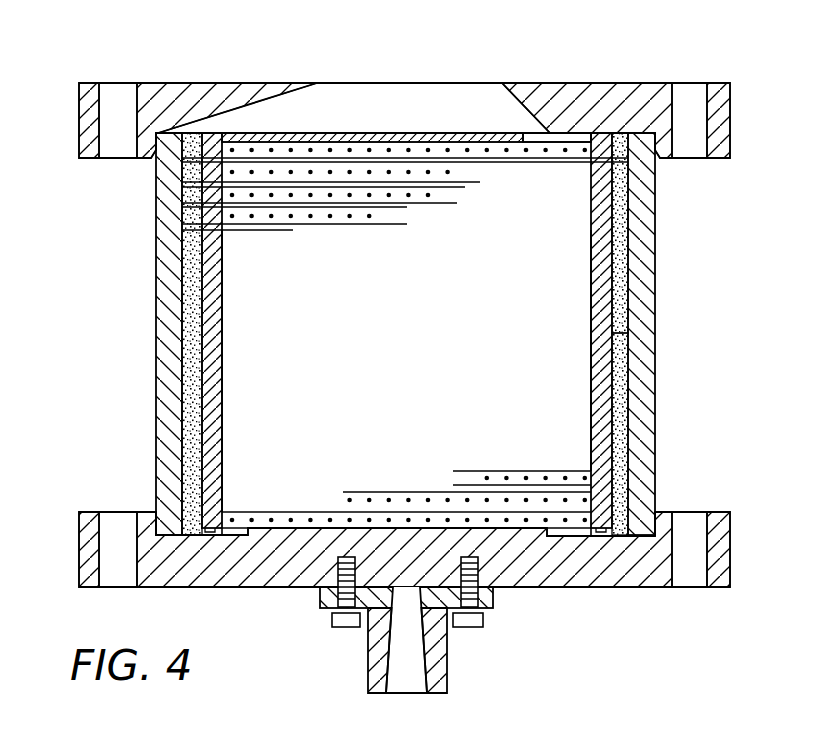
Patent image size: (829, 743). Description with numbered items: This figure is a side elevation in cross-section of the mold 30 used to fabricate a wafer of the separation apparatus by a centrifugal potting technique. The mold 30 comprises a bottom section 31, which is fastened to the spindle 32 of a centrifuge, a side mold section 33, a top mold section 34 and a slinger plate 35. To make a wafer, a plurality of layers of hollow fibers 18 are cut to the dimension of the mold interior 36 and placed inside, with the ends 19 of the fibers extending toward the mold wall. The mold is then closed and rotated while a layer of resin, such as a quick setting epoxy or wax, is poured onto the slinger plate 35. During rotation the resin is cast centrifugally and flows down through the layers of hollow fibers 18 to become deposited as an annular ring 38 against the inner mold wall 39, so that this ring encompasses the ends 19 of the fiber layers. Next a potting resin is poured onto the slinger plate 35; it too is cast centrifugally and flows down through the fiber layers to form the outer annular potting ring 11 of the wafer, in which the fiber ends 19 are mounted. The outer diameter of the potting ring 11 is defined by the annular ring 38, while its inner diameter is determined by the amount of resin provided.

The outer annular potting ring 11 is at (591, 247).
The hollow fibers 18 is at (353, 218).
The ends of hollow fibers 19 is at (182, 208).
The mold 30 is at (394, 355).
The bottom section 31 is at (551, 578).
The spindle 32 is at (449, 661).
The side mold section 33 is at (641, 277).
The top mold section 34 is at (610, 82).
The slinger plate 35 is at (408, 133).
The mold interior 36 is at (246, 322).
The annular ring 38 is at (624, 212).
The inner mold wall 39 is at (623, 473).